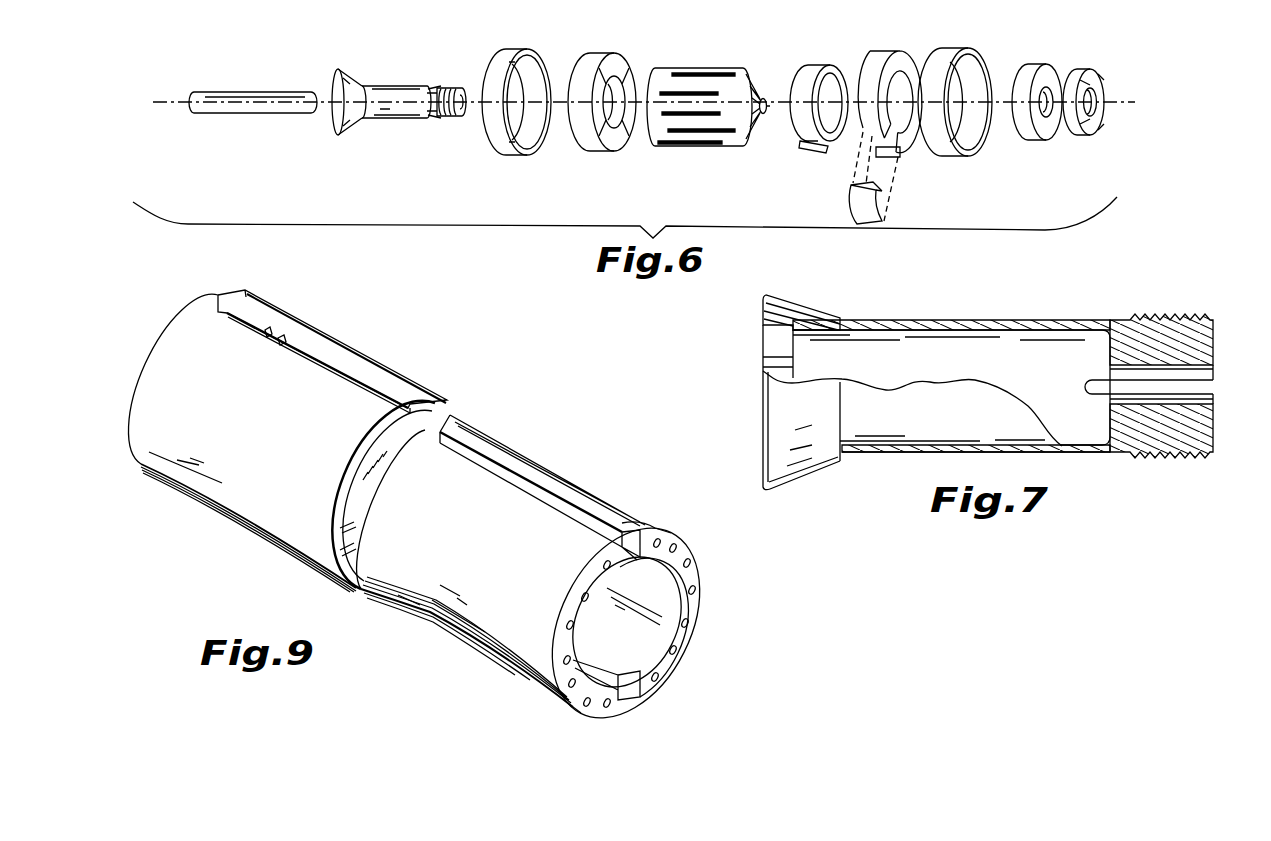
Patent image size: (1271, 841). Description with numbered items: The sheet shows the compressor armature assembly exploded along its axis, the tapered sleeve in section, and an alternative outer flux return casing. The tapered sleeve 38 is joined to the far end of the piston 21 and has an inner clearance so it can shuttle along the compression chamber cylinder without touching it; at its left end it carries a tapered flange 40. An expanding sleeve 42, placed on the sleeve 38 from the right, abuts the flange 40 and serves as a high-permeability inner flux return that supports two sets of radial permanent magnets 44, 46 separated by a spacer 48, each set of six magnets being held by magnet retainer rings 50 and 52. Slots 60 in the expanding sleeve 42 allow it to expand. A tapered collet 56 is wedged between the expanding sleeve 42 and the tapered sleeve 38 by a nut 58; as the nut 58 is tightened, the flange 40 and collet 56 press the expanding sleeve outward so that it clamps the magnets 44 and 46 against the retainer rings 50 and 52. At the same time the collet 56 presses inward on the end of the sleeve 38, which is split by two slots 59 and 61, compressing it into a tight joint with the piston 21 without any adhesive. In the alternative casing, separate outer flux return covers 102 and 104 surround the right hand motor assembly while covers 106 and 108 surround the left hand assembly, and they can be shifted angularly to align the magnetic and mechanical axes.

In FIG. 6, the piston 21 is at (253, 106).
In FIG. 6, the tapered sleeve 38 is at (403, 115).
In FIG. 7, the tapered sleeve 38 is at (930, 435).
In FIG. 6, the tapered flange 40 is at (353, 82).
In FIG. 7, the tapered flange 40 is at (763, 305).
In FIG. 6, the expanding sleeve 42 is at (708, 127).
In FIG. 6, the radial permanent magnets 44 is at (622, 145).
In FIG. 6, the radial permanent magnets 46 is at (903, 150).
In FIG. 6, the spacer 48 is at (825, 146).
In FIG. 6, the magnet retainer ring 50 is at (527, 155).
In FIG. 6, the magnet retainer ring 52 is at (970, 157).
In FIG. 6, the tapered collet 56 is at (1045, 140).
In FIG. 6, the nut 58 is at (1095, 135).
In FIG. 6, the slot 59 is at (470, 96).
In FIG. 7, the slot 59 is at (1196, 389).
In FIG. 6, the slots 60 is at (700, 95).
In FIG. 6, the slot 61 is at (455, 110).
In FIG. 9, the outer flux return cover 102 is at (474, 637).
In FIG. 9, the outer flux return cover 104 is at (637, 521).
In FIG. 9, the outer flux return cover 106 is at (232, 493).
In FIG. 9, the outer flux return cover 108 is at (374, 375).